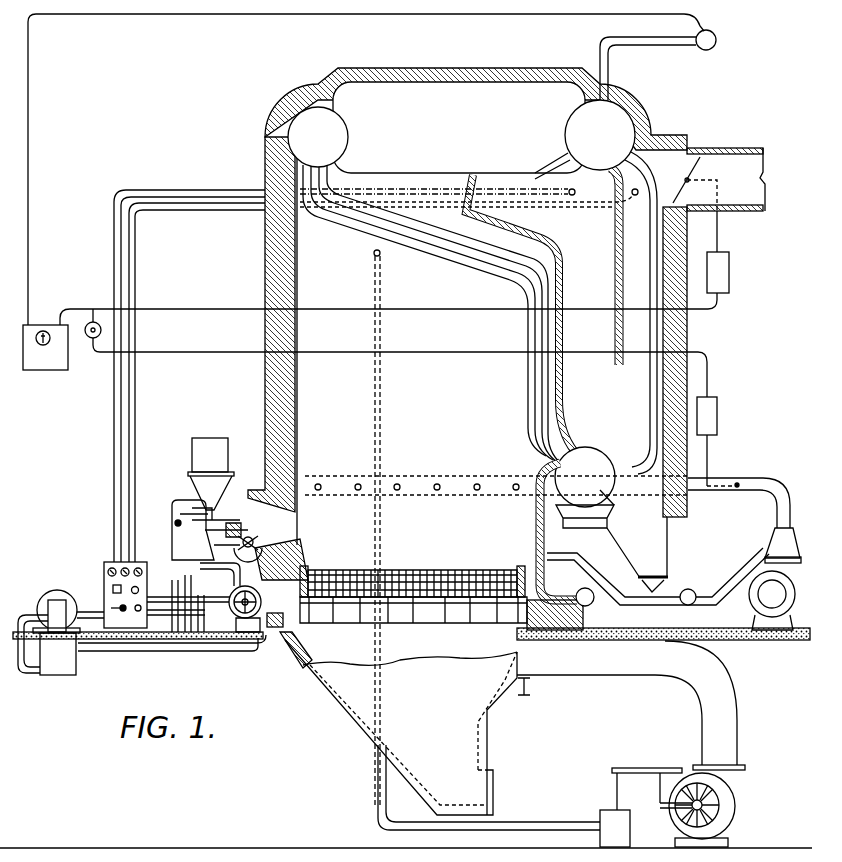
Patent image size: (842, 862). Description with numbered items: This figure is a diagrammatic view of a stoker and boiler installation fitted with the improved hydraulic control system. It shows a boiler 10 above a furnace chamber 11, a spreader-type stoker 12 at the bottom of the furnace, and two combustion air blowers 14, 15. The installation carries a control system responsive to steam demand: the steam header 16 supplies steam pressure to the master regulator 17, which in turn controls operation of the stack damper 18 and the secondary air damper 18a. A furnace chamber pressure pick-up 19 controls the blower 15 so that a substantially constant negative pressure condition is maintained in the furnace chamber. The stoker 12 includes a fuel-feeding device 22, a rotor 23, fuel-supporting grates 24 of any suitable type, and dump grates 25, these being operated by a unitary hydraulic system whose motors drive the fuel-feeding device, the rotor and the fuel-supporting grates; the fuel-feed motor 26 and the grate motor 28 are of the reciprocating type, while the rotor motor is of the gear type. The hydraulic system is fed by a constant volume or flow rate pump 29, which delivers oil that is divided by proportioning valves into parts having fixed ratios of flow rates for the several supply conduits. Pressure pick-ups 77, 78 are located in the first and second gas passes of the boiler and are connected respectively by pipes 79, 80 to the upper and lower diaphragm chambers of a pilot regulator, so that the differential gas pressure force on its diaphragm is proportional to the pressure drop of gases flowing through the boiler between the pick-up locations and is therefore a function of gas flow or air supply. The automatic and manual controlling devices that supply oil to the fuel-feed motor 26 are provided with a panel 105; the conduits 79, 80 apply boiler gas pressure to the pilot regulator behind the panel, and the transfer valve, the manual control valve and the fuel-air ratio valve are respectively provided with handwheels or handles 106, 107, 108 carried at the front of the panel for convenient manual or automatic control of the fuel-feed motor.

The boiler 10 is at (453, 237).
The furnace chamber 11 is at (428, 433).
The stoker 12 is at (324, 556).
The combustion air blower 14 is at (758, 596).
The combustion air blower 15 is at (722, 806).
The steam header 16 is at (704, 50).
The master regulator 17 is at (46, 370).
The stack damper 18 is at (698, 166).
The secondary air damper 18a is at (739, 482).
The furnace chamber pressure pick-up 19 is at (373, 254).
The fuel-feeding device 22 is at (222, 500).
The rotor 23 is at (255, 541).
The fuel-supporting grates 24 is at (344, 578).
The dump grates 25 is at (326, 623).
The fuel-feed motor 26 is at (236, 596).
The grate motor 28 is at (238, 620).
The pump 29 is at (55, 600).
The pressure pick-up 77 is at (573, 189).
The pressure pick-up 78 is at (637, 189).
The pipe 79 is at (193, 190).
The pipe 80 is at (219, 204).
The panel 105 is at (124, 593).
The handwheel 106 is at (121, 611).
The handwheel 107 is at (138, 586).
The handwheel 108 is at (113, 589).